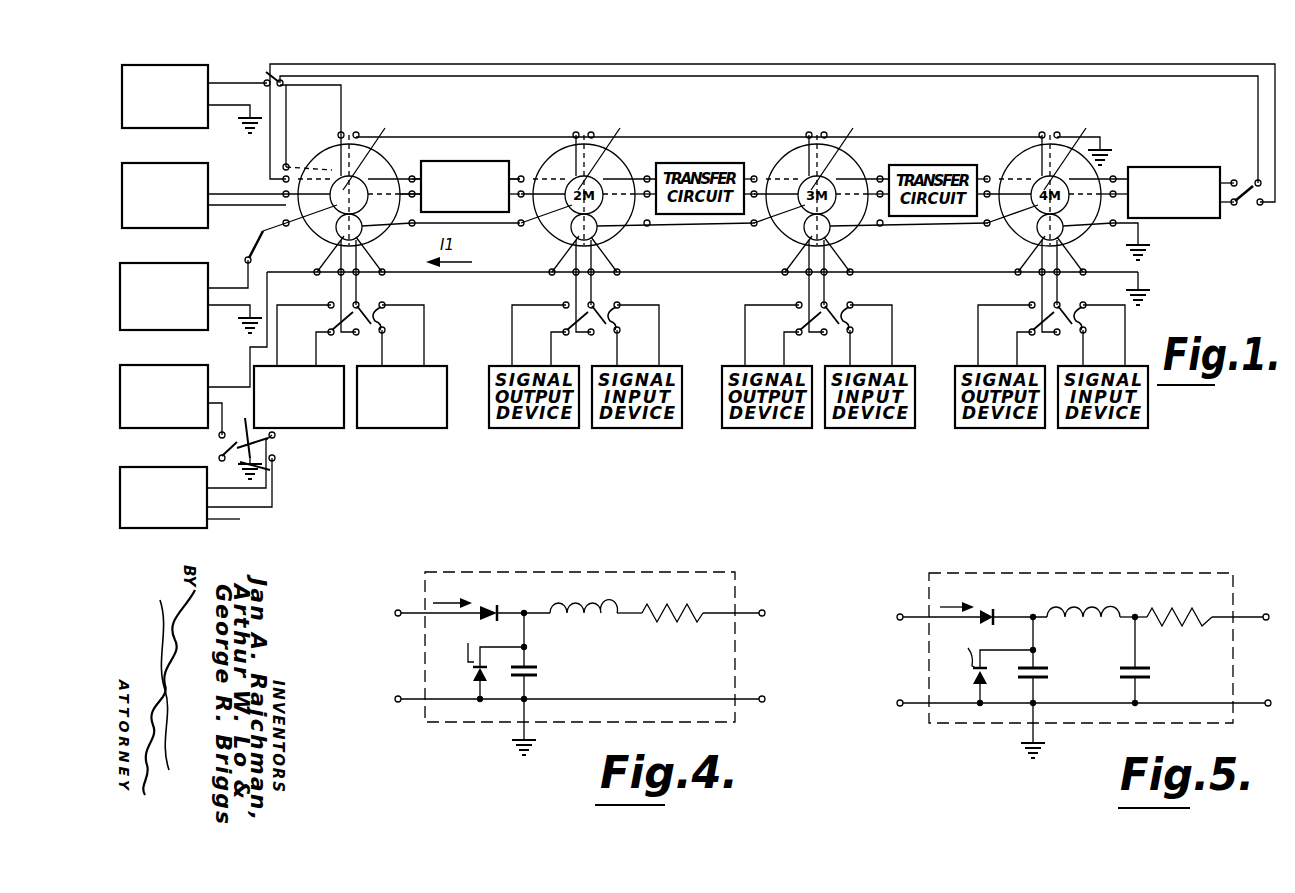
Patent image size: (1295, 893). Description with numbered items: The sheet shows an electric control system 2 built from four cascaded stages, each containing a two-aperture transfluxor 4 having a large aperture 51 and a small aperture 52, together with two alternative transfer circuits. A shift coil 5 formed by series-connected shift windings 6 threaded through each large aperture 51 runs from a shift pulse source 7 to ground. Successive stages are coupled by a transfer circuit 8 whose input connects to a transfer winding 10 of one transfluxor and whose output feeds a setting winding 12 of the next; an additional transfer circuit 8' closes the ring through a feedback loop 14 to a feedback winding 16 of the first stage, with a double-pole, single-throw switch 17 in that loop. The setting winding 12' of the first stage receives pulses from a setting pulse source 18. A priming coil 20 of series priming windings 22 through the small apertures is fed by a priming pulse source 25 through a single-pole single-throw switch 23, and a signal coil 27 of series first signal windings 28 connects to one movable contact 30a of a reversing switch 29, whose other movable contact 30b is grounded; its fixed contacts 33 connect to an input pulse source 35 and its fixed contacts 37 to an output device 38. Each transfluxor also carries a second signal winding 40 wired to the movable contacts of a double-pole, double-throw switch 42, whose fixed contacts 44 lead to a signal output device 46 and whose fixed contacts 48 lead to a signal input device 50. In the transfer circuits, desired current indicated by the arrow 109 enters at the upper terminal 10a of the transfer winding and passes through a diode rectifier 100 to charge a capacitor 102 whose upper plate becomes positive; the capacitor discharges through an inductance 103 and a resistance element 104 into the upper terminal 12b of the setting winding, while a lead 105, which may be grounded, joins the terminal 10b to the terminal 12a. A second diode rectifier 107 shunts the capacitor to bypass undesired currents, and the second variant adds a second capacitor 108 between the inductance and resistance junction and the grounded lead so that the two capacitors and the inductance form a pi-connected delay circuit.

In FIG. 1, the electric control system 2 is at (736, 101).
In FIG. 1, the transfluxor 4 is at (349, 167).
In FIG. 1, the shift coil 5 is at (254, 84).
In FIG. 1, the shift winding 6 is at (330, 141).
In FIG. 1, the shift pulse source 7 is at (204, 62).
In FIG. 1, the transfer circuit 8 is at (470, 169).
In FIG. 4, the transfer circuit 8 is at (571, 664).
In FIG. 5, the transfer circuit 8 is at (1081, 664).
In FIG. 1, the additional transfer circuit 8' is at (1181, 181).
In FIG. 1, the transfer winding 10 is at (394, 169).
In FIG. 1, the upper terminal of the first transfer winding 10a is at (432, 159).
In FIG. 1, the terminal of the first transfer winding 10b is at (395, 207).
In FIG. 1, the setting winding 12 is at (525, 165).
In FIG. 1, the setting winding of the stage 1M transfluxor 12' is at (247, 189).
In FIG. 1, the terminal of the stage 2M setting winding 12a is at (466, 231).
In FIG. 1, the upper terminal of the setting winding 12b is at (505, 160).
In FIG. 1, the feedback loop 14 is at (940, 76).
In FIG. 1, the feedback winding 16 is at (310, 127).
In FIG. 1, the double-pole, single-throw switch 17 is at (1242, 213).
In FIG. 1, the setting pulse source 18 is at (204, 162).
In FIG. 1, the priming coil 20 is at (256, 228).
In FIG. 1, the priming winding 22 is at (303, 213).
In FIG. 1, the single-pole single-throw switch 23 is at (246, 260).
In FIG. 1, the priming pulse source 25 is at (202, 262).
In FIG. 1, the signal coil 27 is at (238, 386).
In FIG. 1, the first signal winding 28 is at (316, 262).
In FIG. 1, the reversing switch 29 is at (264, 419).
In FIG. 1, the movable contact 30a is at (264, 450).
In FIG. 1, the movable contact 30b is at (270, 470).
In FIG. 1, the fixed contacts 33 is at (214, 440).
In FIG. 1, the input pulse source 35 is at (204, 364).
In FIG. 1, the fixed contacts 37 is at (274, 436).
In FIG. 1, the output device 38 is at (196, 483).
In FIG. 1, the second signal winding 40 is at (322, 269).
In FIG. 1, the double-pole, double-throw switch 42 is at (377, 280).
In FIG. 1, the fixed contacts 44 is at (318, 303).
In FIG. 1, the signal output device 46 is at (299, 411).
In FIG. 1, the fixed contacts 48 is at (398, 334).
In FIG. 1, the signal input device 50 is at (409, 411).
In FIG. 1, the large aperture 51 is at (365, 148).
In FIG. 1, the small aperture 52 is at (379, 234).
In FIG. 4, the diode rectifier 100 is at (498, 610).
In FIG. 5, the diode rectifier 100 is at (998, 612).
In FIG. 4, the capacitor 102 is at (538, 668).
In FIG. 5, the capacitor 102 is at (1044, 666).
In FIG. 4, the inductance 103 is at (616, 590).
In FIG. 5, the inductance 103 is at (1098, 610).
In FIG. 4, the resistance element 104 is at (688, 610).
In FIG. 5, the resistance element 104 is at (1212, 600).
In FIG. 4, the lead 105 is at (466, 682).
In FIG. 5, the lead 105 is at (966, 684).
In FIG. 4, the diode rectifier 107 is at (456, 642).
In FIG. 5, the diode rectifier 107 is at (958, 648).
In FIG. 5, the second capacitor 108 is at (1151, 670).
In FIG. 4, the arrow 109 is at (452, 593).
In FIG. 5, the arrow 109 is at (958, 596).